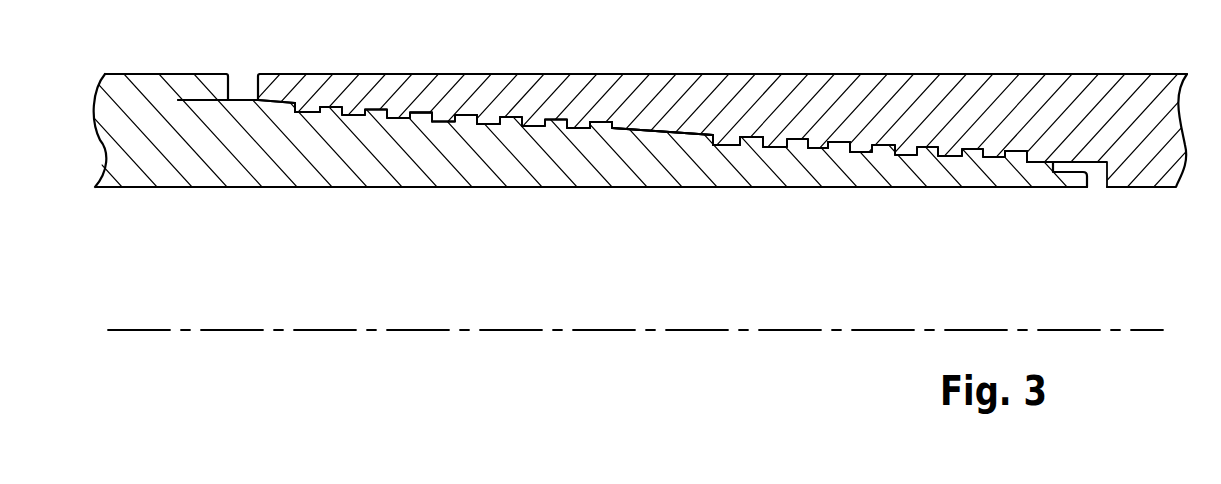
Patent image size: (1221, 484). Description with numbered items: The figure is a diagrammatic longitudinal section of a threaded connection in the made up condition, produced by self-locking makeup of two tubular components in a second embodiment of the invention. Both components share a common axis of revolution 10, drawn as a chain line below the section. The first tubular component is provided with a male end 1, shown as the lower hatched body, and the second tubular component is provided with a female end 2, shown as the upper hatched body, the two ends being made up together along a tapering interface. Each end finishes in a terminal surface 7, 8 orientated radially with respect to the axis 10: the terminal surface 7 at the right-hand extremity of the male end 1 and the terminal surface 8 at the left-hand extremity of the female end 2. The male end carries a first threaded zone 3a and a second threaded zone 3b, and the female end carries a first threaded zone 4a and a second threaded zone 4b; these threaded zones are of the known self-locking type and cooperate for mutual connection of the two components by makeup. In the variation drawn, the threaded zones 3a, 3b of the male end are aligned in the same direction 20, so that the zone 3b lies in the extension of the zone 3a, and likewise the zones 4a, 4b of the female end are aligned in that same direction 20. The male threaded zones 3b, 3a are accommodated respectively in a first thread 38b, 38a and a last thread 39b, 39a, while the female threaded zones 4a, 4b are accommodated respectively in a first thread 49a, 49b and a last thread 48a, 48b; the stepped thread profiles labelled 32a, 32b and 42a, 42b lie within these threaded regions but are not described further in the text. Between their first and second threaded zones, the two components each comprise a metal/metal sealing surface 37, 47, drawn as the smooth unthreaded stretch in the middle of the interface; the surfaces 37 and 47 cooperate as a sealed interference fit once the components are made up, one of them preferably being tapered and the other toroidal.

The male end 1 is at (157, 185).
The female end 2 is at (1121, 109).
The first threaded zone of the male end 3a is at (373, 158).
The second threaded zone of the male end 3b is at (897, 176).
The first threaded zone of the female end 4a is at (446, 92).
The second threaded zone of the female end 4b is at (956, 120).
The terminal surface 7 is at (1087, 178).
The terminal surface 8 is at (257, 94).
The axis of revolution 10 is at (1100, 330).
The direction 20 is at (200, 100).
The first tooth flank 32a is at (431, 121).
The second tooth flank 32b is at (827, 150).
The metal/metal sealing surface 37 is at (655, 137).
The first thread 38a is at (600, 128).
The first thread 38b is at (1012, 158).
The last thread 39a is at (290, 106).
The last thread 39b is at (747, 145).
The first groove 42a is at (487, 118).
The second groove 42b is at (845, 148).
The metal/metal sealing surface 47 is at (690, 134).
The last thread 48a is at (615, 128).
The last thread 48b is at (1048, 157).
The first thread 49a is at (310, 102).
The first thread 49b is at (745, 140).